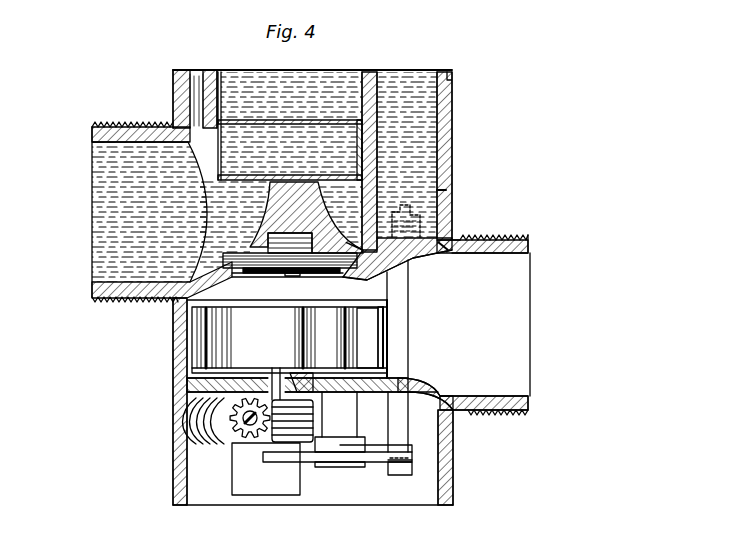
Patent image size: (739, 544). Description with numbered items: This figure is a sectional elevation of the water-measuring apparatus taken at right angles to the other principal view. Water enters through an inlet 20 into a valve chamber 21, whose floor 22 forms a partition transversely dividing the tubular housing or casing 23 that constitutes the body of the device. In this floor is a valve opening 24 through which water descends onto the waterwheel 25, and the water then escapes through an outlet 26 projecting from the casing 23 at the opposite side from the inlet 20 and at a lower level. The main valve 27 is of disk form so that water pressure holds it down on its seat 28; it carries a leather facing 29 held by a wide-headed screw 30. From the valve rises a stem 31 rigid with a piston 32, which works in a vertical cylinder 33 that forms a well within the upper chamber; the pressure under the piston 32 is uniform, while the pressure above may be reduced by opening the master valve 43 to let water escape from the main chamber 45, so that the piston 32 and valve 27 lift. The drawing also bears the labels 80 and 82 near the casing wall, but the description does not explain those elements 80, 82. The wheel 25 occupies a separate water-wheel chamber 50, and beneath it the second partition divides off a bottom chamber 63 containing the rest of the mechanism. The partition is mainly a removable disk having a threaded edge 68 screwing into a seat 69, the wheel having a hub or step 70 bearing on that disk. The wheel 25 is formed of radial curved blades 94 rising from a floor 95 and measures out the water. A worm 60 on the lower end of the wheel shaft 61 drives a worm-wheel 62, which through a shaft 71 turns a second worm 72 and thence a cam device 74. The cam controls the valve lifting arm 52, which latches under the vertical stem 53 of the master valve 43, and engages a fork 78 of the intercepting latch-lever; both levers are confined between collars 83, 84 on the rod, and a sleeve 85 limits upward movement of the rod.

The inlet 20 is at (102, 253).
The valve chamber 21 is at (340, 216).
The floor 22 is at (220, 280).
The tubular housing or casing 23 is at (447, 100).
The valve opening 24 is at (335, 278).
The waterwheel 25 is at (289, 339).
The outlet 26 is at (530, 375).
The main valve 27 is at (243, 251).
The valve seat 28 is at (226, 261).
The facing 29 is at (258, 273).
The wide-headed screw 30 is at (293, 276).
The stem 31 is at (273, 204).
The piston 32 is at (310, 182).
The vertical cylinder 33 is at (377, 77).
The master valve 43 is at (418, 232).
The main chamber 45 is at (196, 80).
The water-wheel chamber 50 is at (192, 356).
The valve lifting arm 52 is at (375, 448).
The vertical stem 53 is at (402, 328).
The worm 60 is at (309, 423).
The wheel shaft 61 is at (312, 377).
The worm-wheel 62 is at (245, 438).
The bottom chamber 63 is at (431, 457).
The threaded edge 68 is at (408, 383).
The seat 69 is at (392, 383).
The hub or step 70 is at (272, 380).
The shaft 71 is at (222, 437).
The second worm 72 is at (200, 438).
The cam device 74 is at (240, 478).
The fork 78 is at (273, 462).
The port 80 is at (428, 225).
The port 82 is at (430, 194).
The collar 83 is at (353, 467).
The collar 84 is at (305, 455).
The sleeve 85 is at (340, 436).
The radial curved blades 94 is at (363, 320).
The floor 95 is at (235, 377).